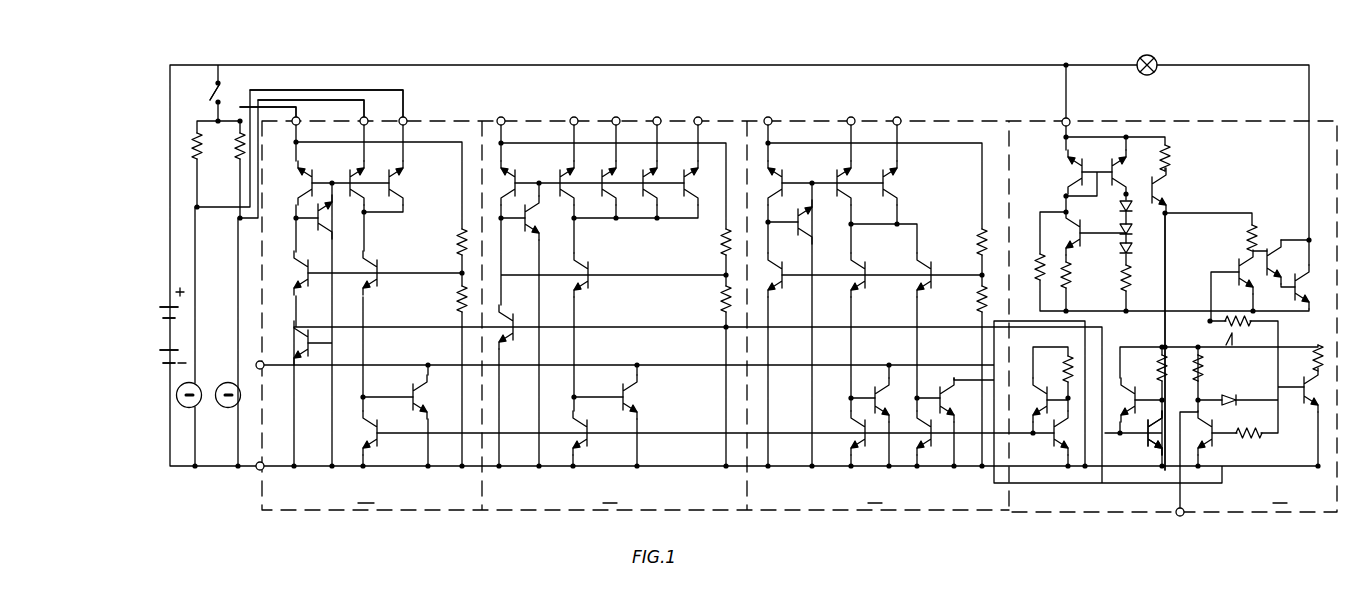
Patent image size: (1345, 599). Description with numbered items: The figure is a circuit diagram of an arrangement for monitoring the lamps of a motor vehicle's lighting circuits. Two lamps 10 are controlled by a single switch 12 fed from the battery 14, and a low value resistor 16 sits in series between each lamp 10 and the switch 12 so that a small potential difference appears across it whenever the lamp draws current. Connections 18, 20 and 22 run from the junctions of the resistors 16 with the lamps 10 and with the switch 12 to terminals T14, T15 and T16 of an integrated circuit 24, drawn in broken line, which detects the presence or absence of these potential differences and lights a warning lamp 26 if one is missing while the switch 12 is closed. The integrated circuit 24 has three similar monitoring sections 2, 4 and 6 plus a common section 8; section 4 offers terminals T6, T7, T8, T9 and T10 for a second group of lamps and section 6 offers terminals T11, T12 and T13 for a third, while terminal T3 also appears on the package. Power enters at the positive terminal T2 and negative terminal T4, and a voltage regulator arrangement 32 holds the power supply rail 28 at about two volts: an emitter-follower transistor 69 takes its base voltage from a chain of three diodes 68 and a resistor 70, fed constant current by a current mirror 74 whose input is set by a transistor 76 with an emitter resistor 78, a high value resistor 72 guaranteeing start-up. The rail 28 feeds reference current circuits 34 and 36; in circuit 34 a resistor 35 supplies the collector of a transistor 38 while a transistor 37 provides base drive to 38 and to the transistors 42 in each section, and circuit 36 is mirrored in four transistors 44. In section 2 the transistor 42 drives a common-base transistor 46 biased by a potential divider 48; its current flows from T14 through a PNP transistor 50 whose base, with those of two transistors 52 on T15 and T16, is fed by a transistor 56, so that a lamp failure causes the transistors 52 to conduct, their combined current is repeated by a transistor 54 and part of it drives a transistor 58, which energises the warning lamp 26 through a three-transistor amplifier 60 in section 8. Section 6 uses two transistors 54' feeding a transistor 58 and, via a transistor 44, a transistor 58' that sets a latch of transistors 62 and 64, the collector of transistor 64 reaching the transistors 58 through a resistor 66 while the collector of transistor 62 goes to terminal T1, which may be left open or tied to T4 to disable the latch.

The circuit section 2 is at (366, 494).
The circuit section 4 is at (610, 494).
The circuit section 6 is at (875, 494).
The common circuit section 8 is at (1280, 494).
The lamps 10 is at (225, 398).
The switch 12 is at (212, 93).
The battery 14 is at (180, 307).
The low value resistor 16 is at (240, 160).
The connection 18 is at (365, 96).
The connection 20 is at (322, 100).
The connection 22 is at (276, 100).
The integrated circuit 24 is at (782, 512).
The warning lamp 26 is at (1157, 62).
The power supply rail 28 is at (1167, 255).
The voltage regulator arrangement 32 is at (1172, 178).
The reference current circuit 34 is at (1137, 455).
The resistor 35 is at (1160, 368).
The reference current circuit 36 is at (1050, 455).
The NPN transistor 37 is at (1133, 405).
The NPN transistor 38 is at (1150, 445).
The NPN transistor 42 is at (310, 343).
The transistor 44 is at (378, 440).
The transistor 46 is at (306, 280).
The potential divider 48 is at (458, 240).
The PNP transistor 50 is at (310, 183).
The PNP transistor 52 is at (350, 175).
The transistor 54 is at (382, 264).
The transistor 54' is at (728, 229).
The PNP transistor 56 is at (318, 228).
The transistor 58 is at (642, 380).
The transistor 58' is at (943, 380).
The direct-coupled three-transistor amplifier 60 is at (1270, 238).
The transistor 62 is at (1214, 440).
The transistor 64 is at (1258, 394).
The resistor 66 is at (1242, 349).
The diodes 68 is at (1133, 231).
The transistor 69 is at (1166, 192).
The resistor 70 is at (1132, 278).
The high value resistor 72 is at (1040, 250).
The current mirror 74 is at (1080, 172).
The NPN transistor 76 is at (1080, 240).
The ohmic resistor 78 is at (1072, 280).
The terminal T1 is at (1182, 516).
The terminal T2 is at (1069, 119).
The terminal T3 is at (257, 363).
The terminal T4 is at (258, 469).
The terminal T6 is at (501, 117).
The terminal T7 is at (574, 117).
The terminal T8 is at (616, 117).
The terminal T9 is at (657, 117).
The terminal T10 is at (699, 117).
The terminal T11 is at (769, 117).
The terminal T12 is at (852, 117).
The terminal T13 is at (898, 117).
The terminal T14 is at (297, 117).
The terminal T15 is at (367, 116).
The terminal T16 is at (405, 118).